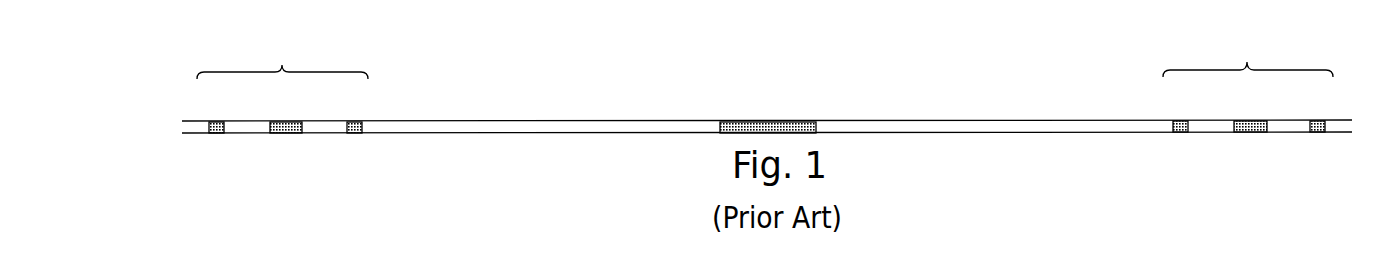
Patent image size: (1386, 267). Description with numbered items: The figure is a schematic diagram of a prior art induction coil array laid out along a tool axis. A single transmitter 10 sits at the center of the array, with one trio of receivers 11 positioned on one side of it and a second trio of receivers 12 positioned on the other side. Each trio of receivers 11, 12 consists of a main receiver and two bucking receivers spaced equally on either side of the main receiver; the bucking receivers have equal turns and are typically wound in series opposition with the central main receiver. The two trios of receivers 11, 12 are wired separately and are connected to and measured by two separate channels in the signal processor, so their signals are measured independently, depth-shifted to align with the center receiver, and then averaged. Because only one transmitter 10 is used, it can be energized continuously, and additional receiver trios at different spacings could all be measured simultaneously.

The transmitter 10 is at (797, 121).
The trio of receivers 11 is at (282, 65).
The trio of receivers 12 is at (1247, 62).